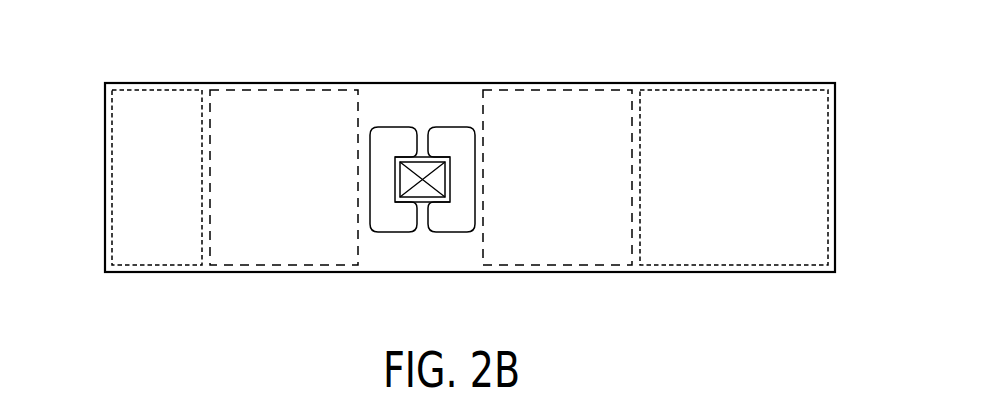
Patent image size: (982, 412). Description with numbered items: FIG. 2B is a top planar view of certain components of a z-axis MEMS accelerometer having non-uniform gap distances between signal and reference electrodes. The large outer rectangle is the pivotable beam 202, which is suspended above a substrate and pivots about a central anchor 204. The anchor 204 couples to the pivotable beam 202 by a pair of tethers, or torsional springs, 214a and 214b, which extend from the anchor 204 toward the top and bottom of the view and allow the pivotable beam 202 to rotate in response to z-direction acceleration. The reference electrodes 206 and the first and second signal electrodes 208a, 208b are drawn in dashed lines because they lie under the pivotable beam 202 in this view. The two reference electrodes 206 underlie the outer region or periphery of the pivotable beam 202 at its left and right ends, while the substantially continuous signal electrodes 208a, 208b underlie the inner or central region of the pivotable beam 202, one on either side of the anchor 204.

The pivotable beam 202 is at (104, 133).
The anchor 204 is at (422, 177).
The reference electrodes 206 is at (155, 95).
The first signal electrode 208a is at (282, 97).
The second signal electrode 208b is at (558, 95).
The tether 214a is at (418, 108).
The tether 214b is at (416, 250).